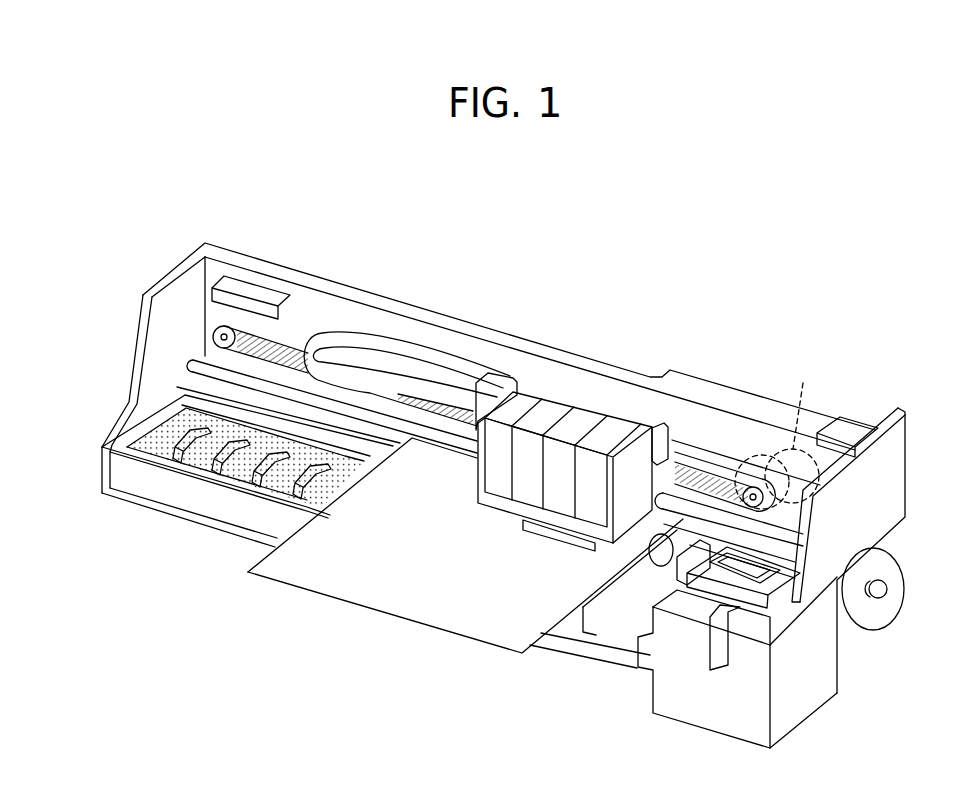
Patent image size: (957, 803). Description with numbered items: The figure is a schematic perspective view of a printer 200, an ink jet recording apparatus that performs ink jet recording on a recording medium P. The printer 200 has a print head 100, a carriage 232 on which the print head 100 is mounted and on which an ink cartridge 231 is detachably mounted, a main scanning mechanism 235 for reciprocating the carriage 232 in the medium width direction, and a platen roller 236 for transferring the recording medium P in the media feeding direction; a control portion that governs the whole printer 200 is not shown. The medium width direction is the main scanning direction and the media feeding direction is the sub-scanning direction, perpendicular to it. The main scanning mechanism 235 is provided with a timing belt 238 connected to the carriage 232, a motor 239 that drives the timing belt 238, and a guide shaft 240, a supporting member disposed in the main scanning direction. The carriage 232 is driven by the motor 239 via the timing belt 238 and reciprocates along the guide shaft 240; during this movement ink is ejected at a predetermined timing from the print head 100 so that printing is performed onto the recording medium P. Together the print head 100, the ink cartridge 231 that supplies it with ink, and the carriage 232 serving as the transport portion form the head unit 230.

The printer 200 is at (646, 222).
The print head 100 is at (523, 525).
The head unit 230 is at (574, 546).
The ink cartridge 231 is at (528, 398).
The carriage 232 is at (660, 428).
The main scanning mechanism 235 is at (723, 443).
The platen roller 236 is at (180, 398).
The timing belt 238 is at (294, 338).
The motor 239 is at (798, 410).
The guide shaft 240 is at (650, 562).
The recording medium P is at (377, 600).